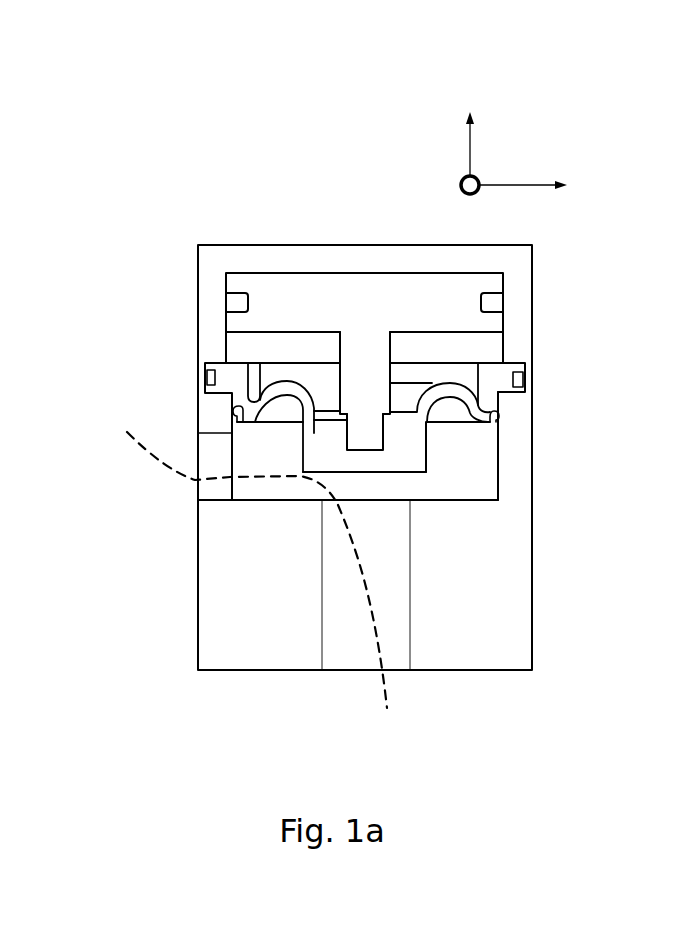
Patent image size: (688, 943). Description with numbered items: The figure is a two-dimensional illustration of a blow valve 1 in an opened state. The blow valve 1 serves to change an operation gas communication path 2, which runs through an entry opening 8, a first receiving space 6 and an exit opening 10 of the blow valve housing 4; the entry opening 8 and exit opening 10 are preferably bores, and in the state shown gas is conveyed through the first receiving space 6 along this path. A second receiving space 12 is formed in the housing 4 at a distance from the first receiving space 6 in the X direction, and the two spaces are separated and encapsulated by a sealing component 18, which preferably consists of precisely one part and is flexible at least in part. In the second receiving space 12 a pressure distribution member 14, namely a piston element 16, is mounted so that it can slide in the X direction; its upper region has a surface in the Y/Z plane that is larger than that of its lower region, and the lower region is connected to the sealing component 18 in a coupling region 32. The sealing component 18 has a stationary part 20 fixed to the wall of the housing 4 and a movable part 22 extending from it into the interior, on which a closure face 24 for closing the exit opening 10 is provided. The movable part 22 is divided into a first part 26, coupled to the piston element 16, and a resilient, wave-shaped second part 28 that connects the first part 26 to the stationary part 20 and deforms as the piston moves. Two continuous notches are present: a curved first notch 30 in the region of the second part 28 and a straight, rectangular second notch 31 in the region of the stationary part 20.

The blow valve 1 is at (373, 426).
The operation gas communication path 2 is at (380, 652).
The blow valve housing 4 is at (560, 420).
The first receiving space 6 is at (438, 473).
The entry opening 8 is at (198, 500).
The exit opening 10 is at (410, 502).
The second receiving space 12 is at (468, 350).
The pressure distribution member 14 is at (355, 350).
The piston element 16 is at (258, 283).
The sealing component 18 is at (417, 448).
The stationary part 20 is at (232, 368).
The movable part 22 is at (318, 433).
The closure face 24 is at (320, 472).
The first part 26 is at (315, 450).
The second part 28 is at (270, 385).
The first notch 30 is at (497, 415).
The second notch 31 is at (525, 372).
The coupling region 32 is at (372, 450).